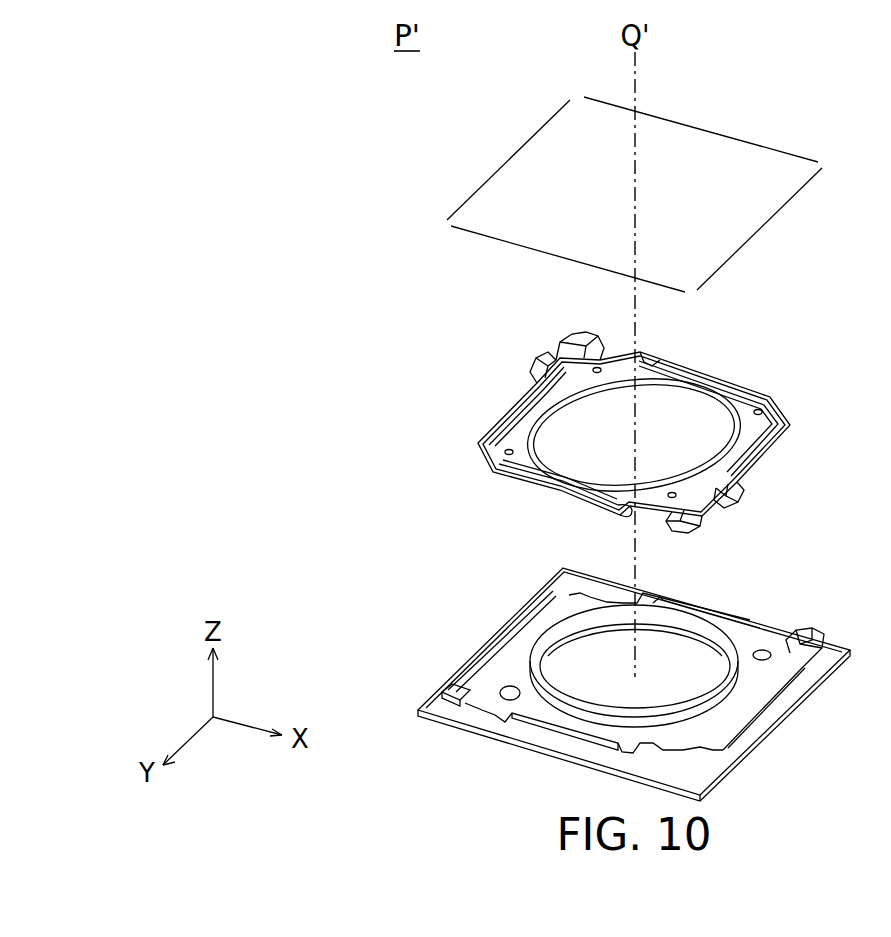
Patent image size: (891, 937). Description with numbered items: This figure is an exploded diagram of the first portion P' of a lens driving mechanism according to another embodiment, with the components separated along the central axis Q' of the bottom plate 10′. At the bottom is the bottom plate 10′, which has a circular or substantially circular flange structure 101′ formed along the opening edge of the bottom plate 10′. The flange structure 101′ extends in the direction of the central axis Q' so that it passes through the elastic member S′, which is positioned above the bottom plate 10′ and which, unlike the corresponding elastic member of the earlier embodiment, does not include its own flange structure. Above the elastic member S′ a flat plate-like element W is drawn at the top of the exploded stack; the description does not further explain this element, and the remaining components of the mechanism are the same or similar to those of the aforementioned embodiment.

The wafer W is at (762, 228).
The elastic member S′ is at (774, 456).
The bottom plate 10′ is at (784, 724).
The flange structure 101′ is at (713, 640).